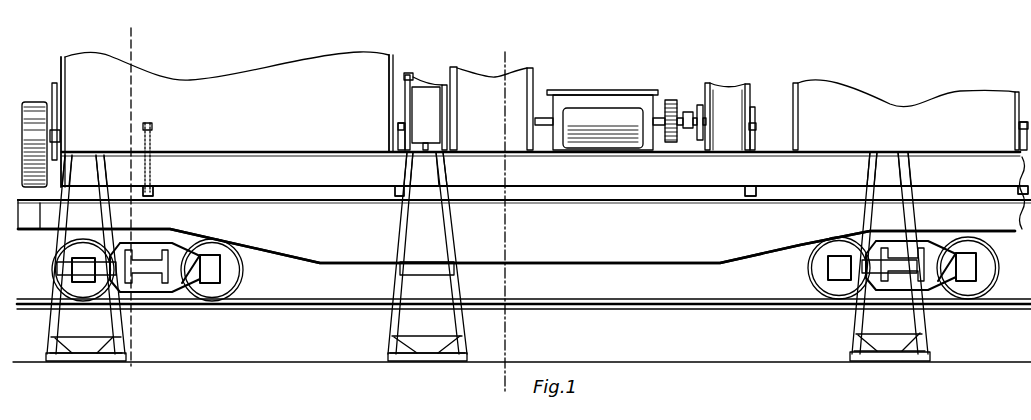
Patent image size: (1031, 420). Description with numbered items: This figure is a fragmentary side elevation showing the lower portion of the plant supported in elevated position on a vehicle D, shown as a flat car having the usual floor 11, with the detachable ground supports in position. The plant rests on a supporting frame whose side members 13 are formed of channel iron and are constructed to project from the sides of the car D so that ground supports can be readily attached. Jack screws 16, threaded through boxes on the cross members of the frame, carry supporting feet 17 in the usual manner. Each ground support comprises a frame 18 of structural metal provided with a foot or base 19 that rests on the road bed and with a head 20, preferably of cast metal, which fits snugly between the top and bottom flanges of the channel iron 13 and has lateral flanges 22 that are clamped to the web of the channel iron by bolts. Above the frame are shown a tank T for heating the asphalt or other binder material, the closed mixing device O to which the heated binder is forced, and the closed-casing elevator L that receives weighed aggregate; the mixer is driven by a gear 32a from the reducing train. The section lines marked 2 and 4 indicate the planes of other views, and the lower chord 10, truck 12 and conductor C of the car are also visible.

The section line 2- 2 is at (128, 197).
The section line 4- 4 is at (518, 52).
The lower chord of carriage frame 10 is at (516, 246).
The floor 11 is at (685, 202).
The wheeled truck 12 is at (190, 250).
The side members 13 is at (793, 155).
The jack screws 16 is at (153, 135).
The supporting feet 17 is at (145, 196).
The frame 18 is at (100, 207).
The foot 19 is at (127, 357).
The head 20 is at (80, 158).
The lateral flanges 22 is at (107, 163).
The gear 32a is at (673, 100).
The conductor cable C is at (1013, 190).
The vehicle D is at (524, 231).
The elevator L is at (491, 108).
The mixing device O is at (600, 120).
The tank T is at (906, 115).